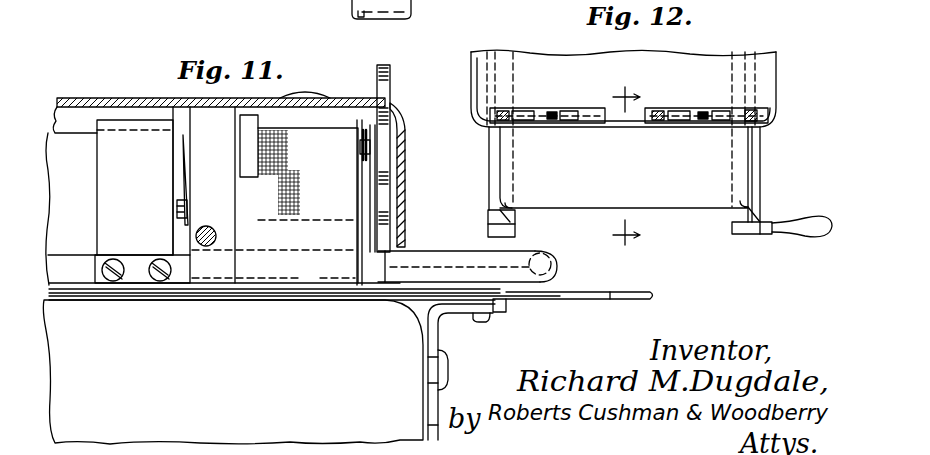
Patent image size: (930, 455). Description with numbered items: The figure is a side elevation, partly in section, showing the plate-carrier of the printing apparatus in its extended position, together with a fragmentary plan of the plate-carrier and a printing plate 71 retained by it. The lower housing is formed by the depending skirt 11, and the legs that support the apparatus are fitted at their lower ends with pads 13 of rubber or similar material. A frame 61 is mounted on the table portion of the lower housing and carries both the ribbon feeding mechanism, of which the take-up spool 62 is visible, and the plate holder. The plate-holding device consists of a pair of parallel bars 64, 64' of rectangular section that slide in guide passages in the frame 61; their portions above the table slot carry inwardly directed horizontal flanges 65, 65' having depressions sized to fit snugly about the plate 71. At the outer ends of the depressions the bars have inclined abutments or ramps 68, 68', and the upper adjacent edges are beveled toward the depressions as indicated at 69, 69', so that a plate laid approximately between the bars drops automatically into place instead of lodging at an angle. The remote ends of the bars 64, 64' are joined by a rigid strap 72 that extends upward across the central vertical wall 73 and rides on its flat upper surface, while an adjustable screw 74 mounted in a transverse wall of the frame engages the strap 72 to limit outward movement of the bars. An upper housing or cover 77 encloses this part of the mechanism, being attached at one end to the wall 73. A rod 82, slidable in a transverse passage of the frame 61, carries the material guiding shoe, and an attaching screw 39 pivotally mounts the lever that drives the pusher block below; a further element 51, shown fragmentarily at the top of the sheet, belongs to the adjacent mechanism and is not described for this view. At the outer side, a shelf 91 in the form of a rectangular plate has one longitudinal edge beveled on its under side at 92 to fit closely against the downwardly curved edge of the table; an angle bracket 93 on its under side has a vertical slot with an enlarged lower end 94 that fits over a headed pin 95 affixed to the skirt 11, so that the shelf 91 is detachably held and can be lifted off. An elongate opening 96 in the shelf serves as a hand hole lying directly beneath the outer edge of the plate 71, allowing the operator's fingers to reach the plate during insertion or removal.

In FIG. 11, the depending skirt 11 is at (233, 372).
In FIG. 12, the pads 13 is at (626, 166).
In FIG. 11, the attaching screw 39 is at (355, 13).
In FIG. 11, the card 51 is at (215, 5).
In FIG. 11, the frame 61 is at (87, 148).
In FIG. 11, the take-up spool 62 is at (326, 144).
In FIG. 11, the bar 64 is at (459, 252).
In FIG. 12, the bar 64 is at (485, 128).
In FIG. 12, the bar 64' is at (769, 137).
In FIG. 12, the horizontal flange 65 is at (486, 168).
In FIG. 12, the horizontal flange 65' is at (774, 172).
In FIG. 11, the inclined abutment 68 is at (544, 256).
In FIG. 12, the inclined abutment 68 is at (488, 223).
In FIG. 12, the inclined abutment 68' is at (782, 231).
In FIG. 12, the beveled edge 69 is at (487, 167).
In FIG. 12, the beveled edge 69' is at (776, 174).
In FIG. 11, the plate 71 is at (508, 312).
In FIG. 12, the plate 71 is at (624, 173).
In FIG. 11, the strap 72 is at (135, 187).
In FIG. 11, the central vertical rib or wall 73 is at (81, 136).
In FIG. 11, the adjustable abutment screw 74 is at (176, 213).
In FIG. 11, the upper housing or cover 77 is at (407, 146).
In FIG. 12, the upper housing or cover 77 is at (780, 70).
In FIG. 11, the rod 82 is at (216, 238).
In FIG. 11, the shelf 91 is at (565, 300).
In FIG. 11, the beveled edge 92 is at (388, 305).
In FIG. 11, the angle bracket 93 is at (445, 333).
In FIG. 11, the enlarged slot end 94 is at (430, 425).
In FIG. 11, the headed pin 95 is at (449, 375).
In FIG. 11, the elongate opening 96 is at (613, 300).